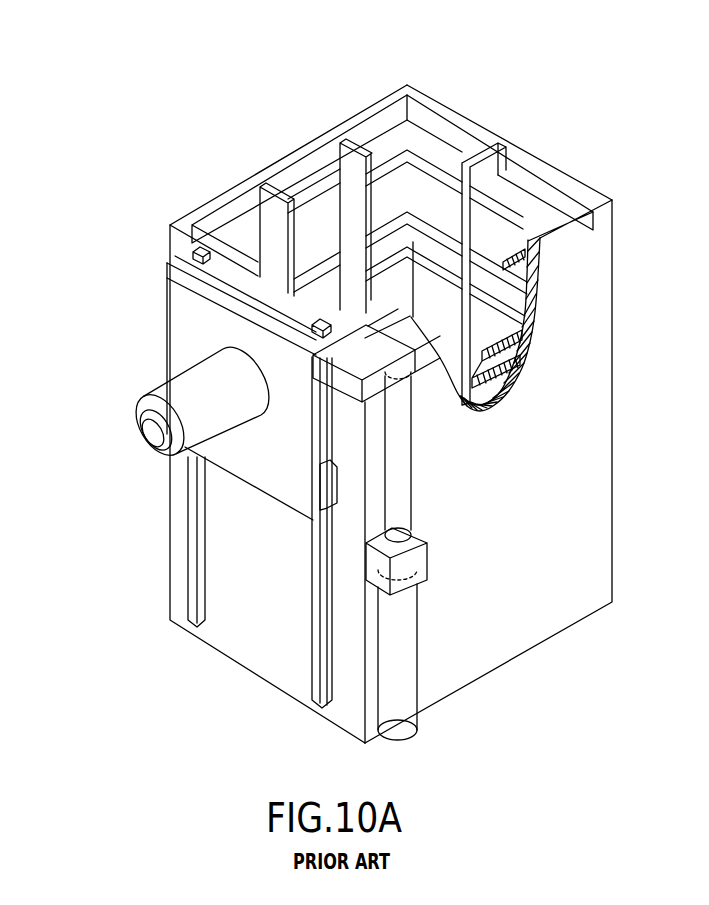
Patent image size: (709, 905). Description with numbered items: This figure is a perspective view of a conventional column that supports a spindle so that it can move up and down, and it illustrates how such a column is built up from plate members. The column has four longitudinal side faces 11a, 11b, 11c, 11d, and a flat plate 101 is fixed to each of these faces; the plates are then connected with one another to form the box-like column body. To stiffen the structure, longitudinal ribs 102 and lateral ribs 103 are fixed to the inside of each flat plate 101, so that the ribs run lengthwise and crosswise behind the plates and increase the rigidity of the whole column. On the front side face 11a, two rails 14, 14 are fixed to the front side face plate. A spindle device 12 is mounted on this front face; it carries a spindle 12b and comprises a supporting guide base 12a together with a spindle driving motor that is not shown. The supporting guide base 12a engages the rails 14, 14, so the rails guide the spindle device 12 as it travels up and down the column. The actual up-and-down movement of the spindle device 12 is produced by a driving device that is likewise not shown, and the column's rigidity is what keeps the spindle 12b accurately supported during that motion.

The front side face 11a is at (237, 650).
The longitudinal side face 11b is at (562, 185).
The longitudinal side face 11c is at (240, 235).
The longitudinal side face 11d is at (585, 498).
The flat plate 101 is at (342, 125).
The longitudinal rib 102 is at (288, 257).
The lateral rib 103 is at (437, 150).
The spindle device 12 is at (258, 458).
The supporting guide base 12a is at (185, 333).
The spindle 12b is at (152, 443).
The rail 14 is at (200, 600).